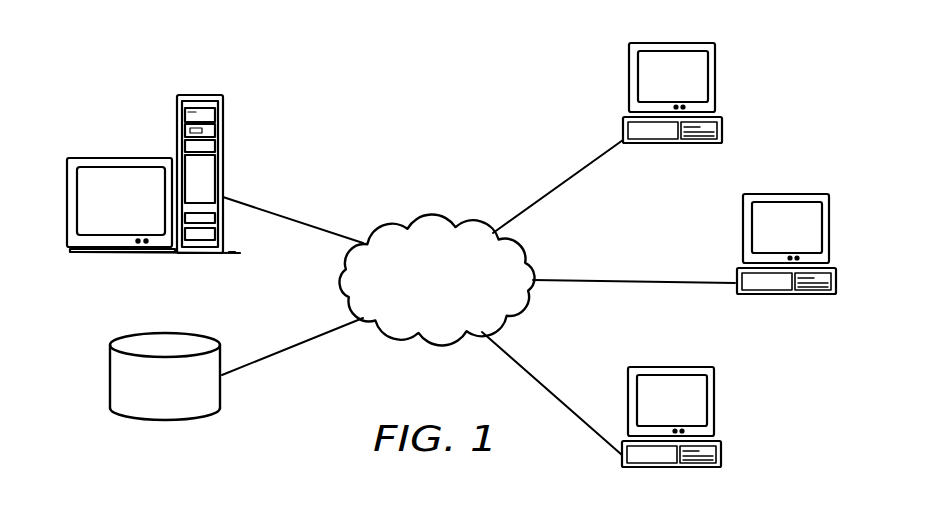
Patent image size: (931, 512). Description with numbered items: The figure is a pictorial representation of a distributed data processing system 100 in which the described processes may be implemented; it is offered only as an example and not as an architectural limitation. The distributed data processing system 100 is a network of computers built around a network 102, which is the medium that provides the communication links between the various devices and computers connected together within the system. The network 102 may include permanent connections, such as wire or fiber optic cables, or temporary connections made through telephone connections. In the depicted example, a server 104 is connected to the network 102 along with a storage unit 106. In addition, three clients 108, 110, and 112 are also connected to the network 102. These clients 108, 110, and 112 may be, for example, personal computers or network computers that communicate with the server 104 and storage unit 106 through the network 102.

The distributed data processing system 100 is at (314, 94).
The network 102 is at (459, 292).
The server 104 is at (178, 118).
The storage unit 106 is at (110, 376).
The client 108 is at (716, 88).
The client 110 is at (833, 238).
The client 112 is at (716, 411).